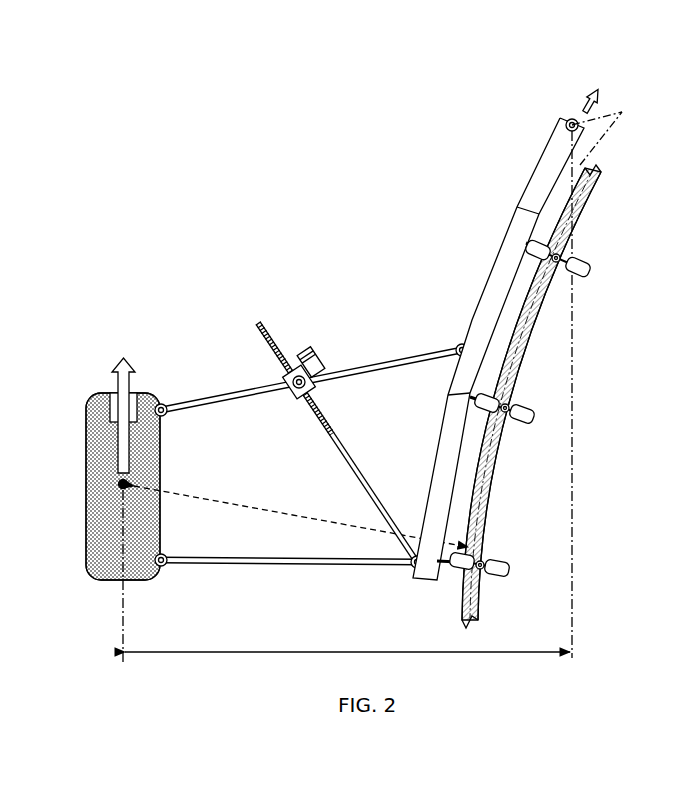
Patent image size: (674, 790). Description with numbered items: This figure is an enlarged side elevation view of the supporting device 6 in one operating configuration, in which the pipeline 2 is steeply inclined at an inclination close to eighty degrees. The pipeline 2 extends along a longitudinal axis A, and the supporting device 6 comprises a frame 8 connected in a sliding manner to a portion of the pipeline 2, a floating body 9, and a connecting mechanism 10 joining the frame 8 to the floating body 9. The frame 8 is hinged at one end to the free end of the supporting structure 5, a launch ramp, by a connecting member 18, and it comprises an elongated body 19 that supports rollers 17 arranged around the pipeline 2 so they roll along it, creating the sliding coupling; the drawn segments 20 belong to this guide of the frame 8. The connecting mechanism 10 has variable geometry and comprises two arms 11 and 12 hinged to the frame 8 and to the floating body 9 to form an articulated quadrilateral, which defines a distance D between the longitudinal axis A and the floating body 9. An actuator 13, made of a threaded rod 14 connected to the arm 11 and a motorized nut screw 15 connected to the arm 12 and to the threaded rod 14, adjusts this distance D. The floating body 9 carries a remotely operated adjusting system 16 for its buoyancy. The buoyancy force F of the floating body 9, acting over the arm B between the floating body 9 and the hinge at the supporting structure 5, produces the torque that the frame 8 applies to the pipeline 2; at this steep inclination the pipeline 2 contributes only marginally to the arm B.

The pipeline 2 is at (485, 590).
The supporting structure 5 is at (606, 107).
The supporting device 6 is at (276, 237).
The frame 8 is at (487, 349).
The floating body 9 is at (152, 450).
The connecting mechanism 10 is at (229, 381).
The arm 11 is at (289, 560).
The arm 12 is at (252, 396).
The actuator 13 is at (326, 331).
The threaded rod 14 is at (364, 483).
The motorized nut screw 15 is at (293, 392).
The adjusting system 16 is at (134, 403).
The rollers 17 is at (544, 246).
The connecting member 18 is at (568, 113).
The elongated body 19 is at (418, 586).
The guide rail segments 20 is at (550, 163).
The longitudinal axis A is at (522, 343).
The arm B is at (347, 638).
The distance D is at (238, 500).
The buoyancy force F is at (118, 382).